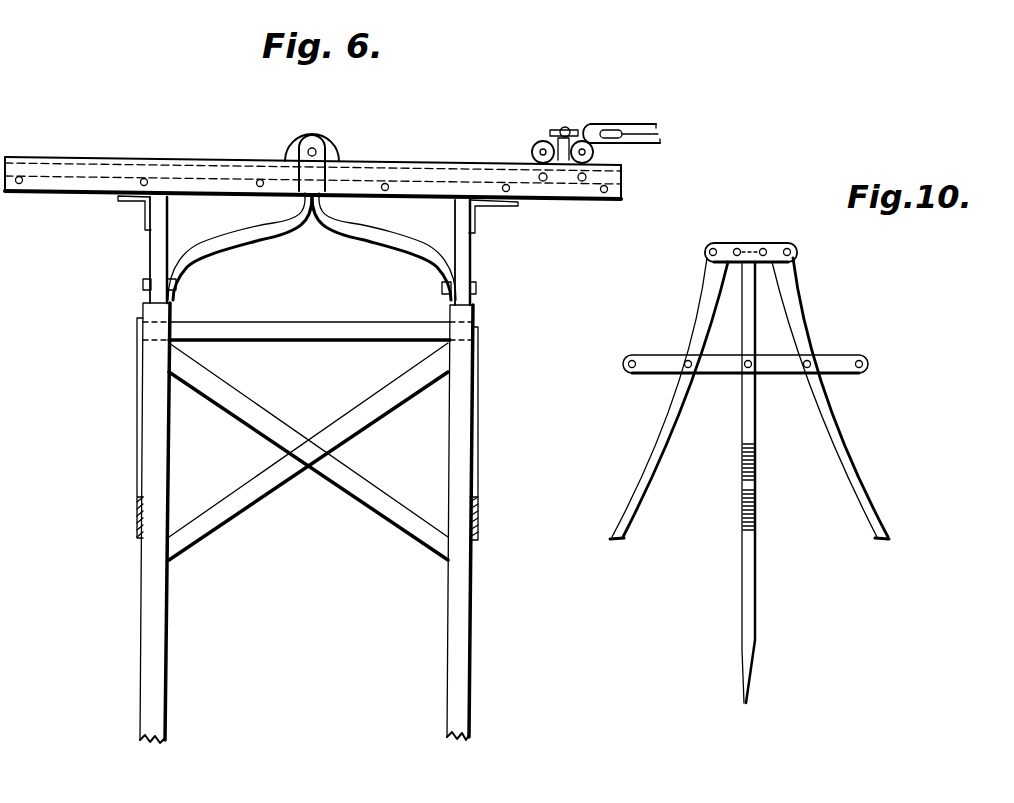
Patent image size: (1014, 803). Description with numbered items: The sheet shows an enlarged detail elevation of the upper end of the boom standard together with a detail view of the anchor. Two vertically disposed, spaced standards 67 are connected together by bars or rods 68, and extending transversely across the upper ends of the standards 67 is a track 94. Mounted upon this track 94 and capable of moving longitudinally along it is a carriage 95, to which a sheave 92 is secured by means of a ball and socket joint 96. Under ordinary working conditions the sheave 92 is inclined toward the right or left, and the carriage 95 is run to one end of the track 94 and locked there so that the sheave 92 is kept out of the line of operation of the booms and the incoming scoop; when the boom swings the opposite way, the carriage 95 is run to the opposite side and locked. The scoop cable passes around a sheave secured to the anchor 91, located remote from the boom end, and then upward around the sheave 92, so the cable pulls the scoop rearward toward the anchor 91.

In FIG. 6, the standards 67 is at (157, 668).
In FIG. 6, the bars or rods 68 is at (306, 331).
In FIG. 10, the anchor 91 is at (768, 482).
In FIG. 6, the sheave 92 is at (664, 133).
In FIG. 6, the track 94 is at (450, 160).
In FIG. 6, the carriage 95 is at (340, 143).
In FIG. 6, the ball and socket joint 96 is at (572, 128).